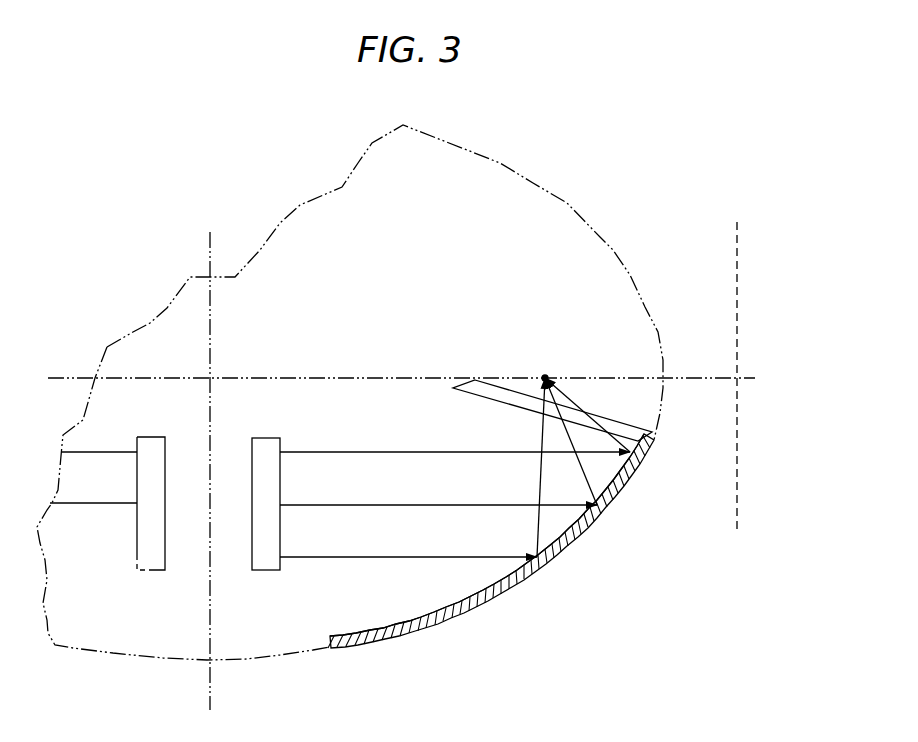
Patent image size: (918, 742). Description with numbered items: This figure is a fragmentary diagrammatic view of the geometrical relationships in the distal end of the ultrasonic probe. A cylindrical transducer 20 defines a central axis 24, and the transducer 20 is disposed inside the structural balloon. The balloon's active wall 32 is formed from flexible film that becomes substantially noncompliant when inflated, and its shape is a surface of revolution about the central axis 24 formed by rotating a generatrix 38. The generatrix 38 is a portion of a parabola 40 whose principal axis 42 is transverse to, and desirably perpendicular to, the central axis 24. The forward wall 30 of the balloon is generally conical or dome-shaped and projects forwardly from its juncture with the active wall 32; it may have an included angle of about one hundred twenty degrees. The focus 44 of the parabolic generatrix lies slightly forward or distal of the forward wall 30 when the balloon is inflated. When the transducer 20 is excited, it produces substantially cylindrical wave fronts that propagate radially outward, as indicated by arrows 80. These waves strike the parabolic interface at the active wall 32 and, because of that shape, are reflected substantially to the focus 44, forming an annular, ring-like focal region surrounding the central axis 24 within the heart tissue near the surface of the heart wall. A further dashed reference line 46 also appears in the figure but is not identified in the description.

The cylindrical transducer 20 is at (137, 552).
The central axis 24 is at (210, 312).
The forward wall 30 is at (472, 402).
The active wall 32 is at (560, 532).
The generatrix 38 is at (600, 523).
The parabola 40 is at (537, 182).
The principal axis 42 is at (252, 376).
The focus 44 is at (546, 375).
The reference plane 46 is at (737, 262).
The arrows 80 is at (82, 502).